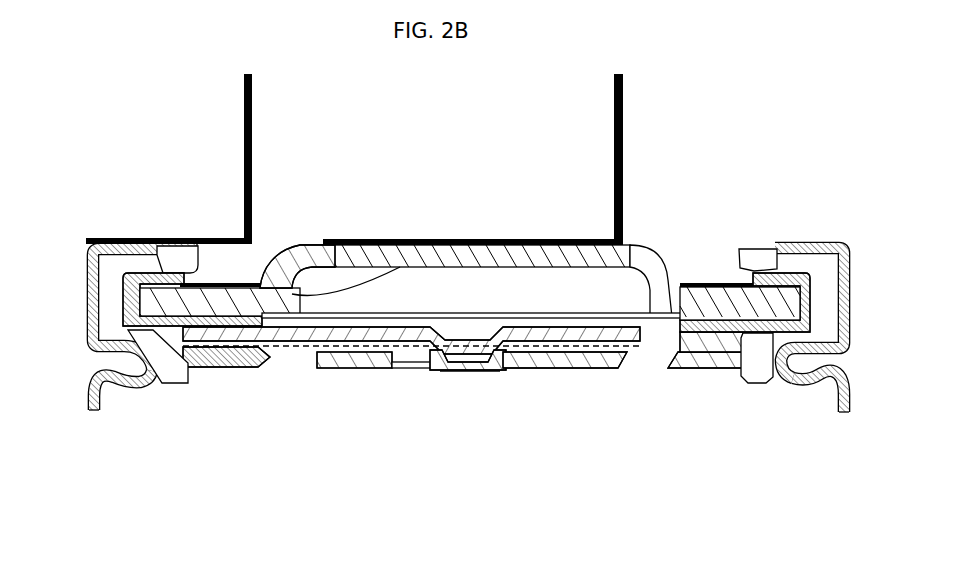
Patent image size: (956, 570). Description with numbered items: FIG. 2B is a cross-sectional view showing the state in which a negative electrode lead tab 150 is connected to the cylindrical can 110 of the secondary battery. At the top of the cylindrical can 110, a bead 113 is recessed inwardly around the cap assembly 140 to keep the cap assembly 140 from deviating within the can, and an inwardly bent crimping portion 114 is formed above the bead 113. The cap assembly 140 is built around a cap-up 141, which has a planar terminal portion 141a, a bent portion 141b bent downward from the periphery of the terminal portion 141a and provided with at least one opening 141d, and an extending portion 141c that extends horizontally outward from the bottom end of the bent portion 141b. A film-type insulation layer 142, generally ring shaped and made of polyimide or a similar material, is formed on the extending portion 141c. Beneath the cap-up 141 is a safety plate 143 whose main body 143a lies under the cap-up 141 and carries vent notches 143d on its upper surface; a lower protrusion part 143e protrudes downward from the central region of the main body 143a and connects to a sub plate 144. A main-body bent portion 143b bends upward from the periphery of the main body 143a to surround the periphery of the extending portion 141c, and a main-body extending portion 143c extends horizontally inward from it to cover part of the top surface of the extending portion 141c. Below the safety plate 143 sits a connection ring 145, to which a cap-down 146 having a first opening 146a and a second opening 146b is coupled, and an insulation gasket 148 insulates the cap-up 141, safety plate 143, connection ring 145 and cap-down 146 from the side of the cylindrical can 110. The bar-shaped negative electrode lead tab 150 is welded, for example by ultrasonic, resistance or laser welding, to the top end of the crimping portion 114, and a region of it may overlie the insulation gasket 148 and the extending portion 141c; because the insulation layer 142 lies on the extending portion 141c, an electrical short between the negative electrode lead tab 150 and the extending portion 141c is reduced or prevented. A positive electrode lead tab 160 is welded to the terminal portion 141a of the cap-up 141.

The cylindrical can 110 is at (92, 413).
The bead 113 is at (112, 365).
The crimping portion 114 is at (138, 244).
The cap assembly 140 is at (651, 216).
The cap-up 141 is at (458, 221).
The terminal portion 141a is at (508, 240).
The bent portion 141b is at (371, 239).
The extending portion 141c is at (245, 287).
The opening 141d is at (590, 241).
The insulation layer 142 is at (222, 286).
The safety plate 143 is at (644, 377).
The main body 143a is at (690, 345).
The main-body bent portion 143b is at (809, 385).
The main-body extending portion 143c is at (746, 392).
The vent notches 143d is at (628, 350).
The lower protrusion part 143e is at (472, 373).
The sub plate 144 is at (403, 372).
The connection ring 145 is at (220, 368).
The cap-down 146 is at (340, 372).
The first opening 146a is at (433, 373).
The second opening 146b is at (275, 362).
The insulation gasket 148 is at (171, 385).
The negative electrode lead tab 150 is at (253, 96).
The positive electrode lead tab 160 is at (624, 96).